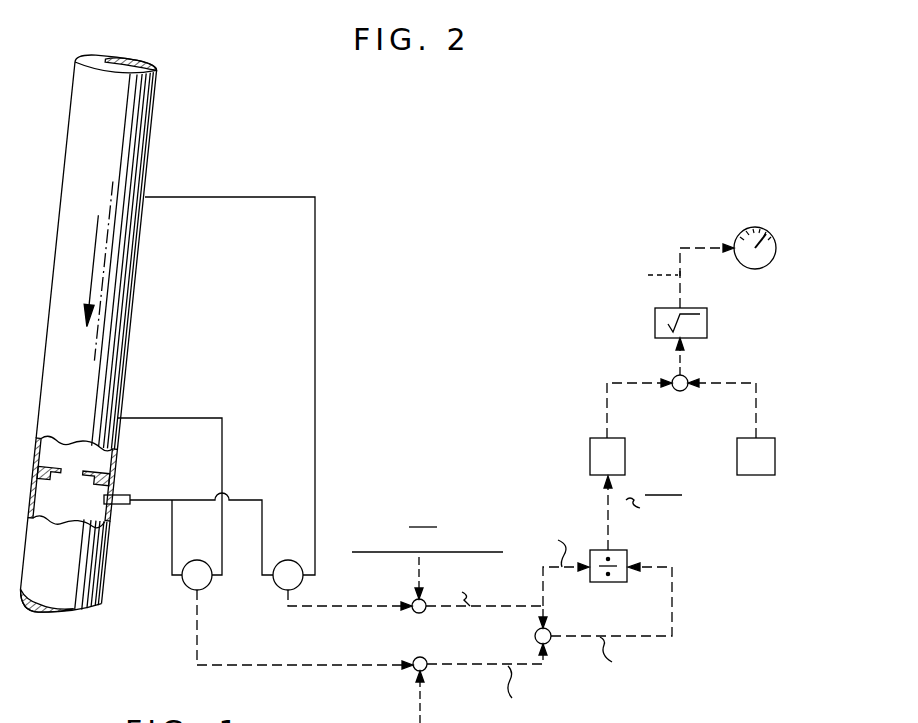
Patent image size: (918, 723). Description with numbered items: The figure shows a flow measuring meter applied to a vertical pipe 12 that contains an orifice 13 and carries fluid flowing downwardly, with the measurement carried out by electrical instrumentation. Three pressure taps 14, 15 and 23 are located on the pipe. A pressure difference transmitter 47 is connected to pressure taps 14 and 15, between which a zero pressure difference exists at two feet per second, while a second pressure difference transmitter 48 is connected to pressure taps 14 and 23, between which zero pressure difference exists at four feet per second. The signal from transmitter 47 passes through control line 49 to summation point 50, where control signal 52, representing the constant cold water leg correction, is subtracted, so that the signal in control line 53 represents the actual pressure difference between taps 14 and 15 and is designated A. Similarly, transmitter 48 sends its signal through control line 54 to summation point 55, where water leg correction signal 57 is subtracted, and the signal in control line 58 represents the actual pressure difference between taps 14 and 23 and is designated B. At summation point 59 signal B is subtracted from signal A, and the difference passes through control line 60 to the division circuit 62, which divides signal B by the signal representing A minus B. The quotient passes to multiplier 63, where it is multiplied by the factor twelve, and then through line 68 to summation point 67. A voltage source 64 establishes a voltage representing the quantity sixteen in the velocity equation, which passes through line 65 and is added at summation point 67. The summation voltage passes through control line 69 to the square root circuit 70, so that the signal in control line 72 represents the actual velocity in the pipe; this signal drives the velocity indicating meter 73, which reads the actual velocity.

The vertical pipe 12 is at (74, 196).
The orifice 13 is at (48, 468).
The pressure tap 14 is at (120, 497).
The pressure tap 15 is at (182, 418).
The pressure tap 23 is at (217, 197).
The pressure difference transmitter 47 is at (188, 588).
The pressure difference transmitter 48 is at (281, 590).
The control line 49 is at (197, 657).
The summation point 50 is at (426, 660).
The control signal 52 is at (418, 700).
The control line 53 is at (490, 665).
The control line 54 is at (350, 593).
The summation point 55 is at (413, 612).
The water leg correction signal 57 is at (419, 566).
The control line 58 is at (499, 606).
The summation point 59 is at (551, 632).
The control line 60 is at (673, 610).
The division circuit 62 is at (625, 558).
The multiplier 63 is at (590, 456).
The voltage source 64 is at (760, 470).
The line 65 is at (757, 420).
The summation point 67 is at (680, 392).
The line 68 is at (606, 406).
The control line 69 is at (682, 365).
The square root circuit 70 is at (655, 323).
The control line 72 is at (680, 248).
The velocity indicating meter 73 is at (765, 266).